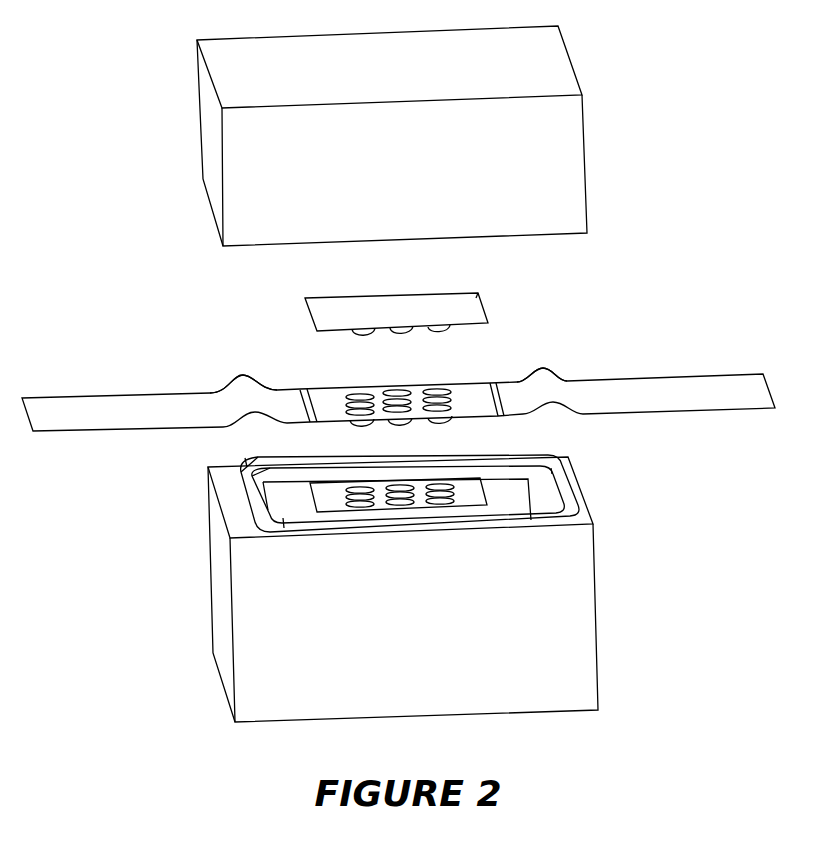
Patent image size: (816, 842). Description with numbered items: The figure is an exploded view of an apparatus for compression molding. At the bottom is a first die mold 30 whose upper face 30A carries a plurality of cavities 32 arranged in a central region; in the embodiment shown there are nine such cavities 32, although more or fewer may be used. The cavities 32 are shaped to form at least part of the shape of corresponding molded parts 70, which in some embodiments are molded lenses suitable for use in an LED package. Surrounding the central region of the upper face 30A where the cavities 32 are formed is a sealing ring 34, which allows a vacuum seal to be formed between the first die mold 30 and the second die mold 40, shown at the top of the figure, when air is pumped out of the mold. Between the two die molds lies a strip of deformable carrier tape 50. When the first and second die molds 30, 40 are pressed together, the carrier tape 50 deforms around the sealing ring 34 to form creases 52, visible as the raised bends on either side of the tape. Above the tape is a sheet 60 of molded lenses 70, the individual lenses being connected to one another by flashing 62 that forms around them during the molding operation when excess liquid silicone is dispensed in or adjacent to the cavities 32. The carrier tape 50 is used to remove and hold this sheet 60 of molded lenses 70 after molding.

The first die mold 30 is at (575, 622).
The upper face 30A is at (235, 522).
The cavities 32 is at (452, 492).
The sealing ring 34 is at (242, 478).
The second die mold 40 is at (585, 128).
The carrier tape 50 is at (653, 385).
The creases 52 is at (248, 383).
The sheet 60 is at (488, 318).
The flashing 62 is at (476, 298).
The molded parts 70 is at (343, 340).